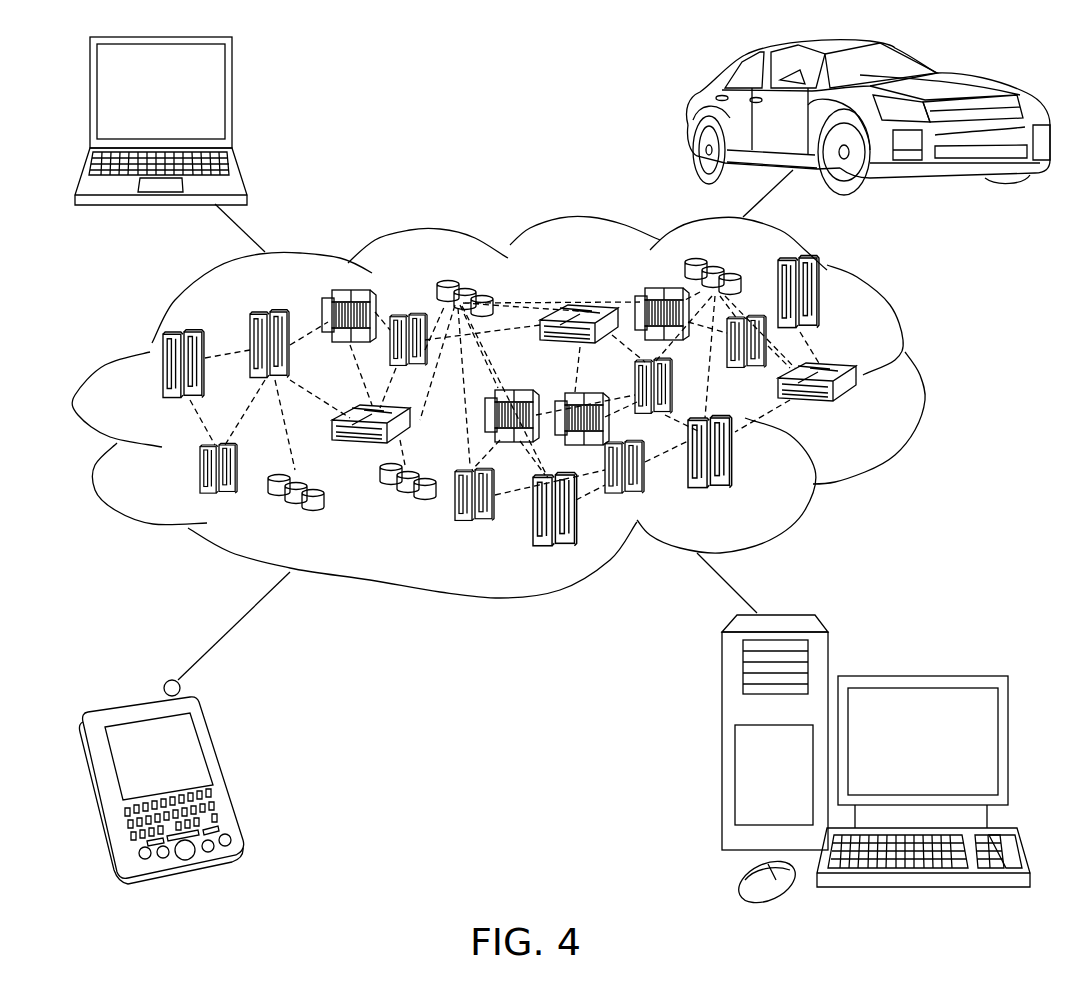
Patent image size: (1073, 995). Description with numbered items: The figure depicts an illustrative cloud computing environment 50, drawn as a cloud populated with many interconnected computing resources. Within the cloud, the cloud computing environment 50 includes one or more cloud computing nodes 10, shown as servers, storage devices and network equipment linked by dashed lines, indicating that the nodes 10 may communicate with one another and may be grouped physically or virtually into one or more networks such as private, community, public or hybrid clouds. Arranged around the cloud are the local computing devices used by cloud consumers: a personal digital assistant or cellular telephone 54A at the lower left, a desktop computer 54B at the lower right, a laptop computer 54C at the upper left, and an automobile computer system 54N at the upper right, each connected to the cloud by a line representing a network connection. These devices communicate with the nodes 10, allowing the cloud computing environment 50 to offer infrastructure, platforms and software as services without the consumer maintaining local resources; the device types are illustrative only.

The cloud computing nodes 10 is at (880, 421).
The cloud computing environment 50 is at (921, 383).
The personal digital assistant or cellular telephone 54A is at (226, 773).
The desktop computer 54B is at (922, 676).
The laptop computer 54C is at (236, 102).
The automobile computer system 54N is at (697, 118).